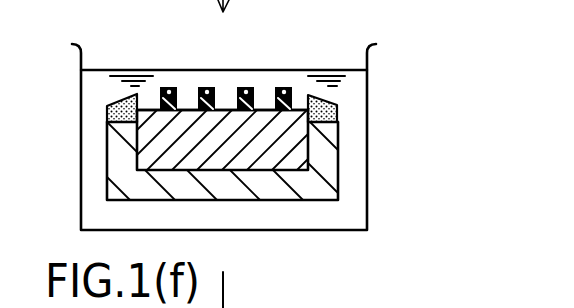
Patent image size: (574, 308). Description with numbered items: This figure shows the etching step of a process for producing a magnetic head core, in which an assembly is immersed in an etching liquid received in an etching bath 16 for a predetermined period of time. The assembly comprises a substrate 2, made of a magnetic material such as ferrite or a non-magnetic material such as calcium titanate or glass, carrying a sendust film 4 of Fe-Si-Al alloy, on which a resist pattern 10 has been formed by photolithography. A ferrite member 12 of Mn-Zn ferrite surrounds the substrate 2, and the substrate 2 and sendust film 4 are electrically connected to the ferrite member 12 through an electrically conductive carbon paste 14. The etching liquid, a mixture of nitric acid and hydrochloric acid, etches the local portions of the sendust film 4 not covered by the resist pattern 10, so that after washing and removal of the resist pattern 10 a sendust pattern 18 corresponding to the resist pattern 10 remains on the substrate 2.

The substrate 2 is at (308, 148).
The sendust film 4 is at (272, 55).
The sendust pattern 18 is at (297, 106).
The resist pattern 10 is at (248, 87).
The ferrite member 12 is at (282, 200).
The carbon paste 14 is at (330, 100).
The etching bath 16 is at (395, 135).